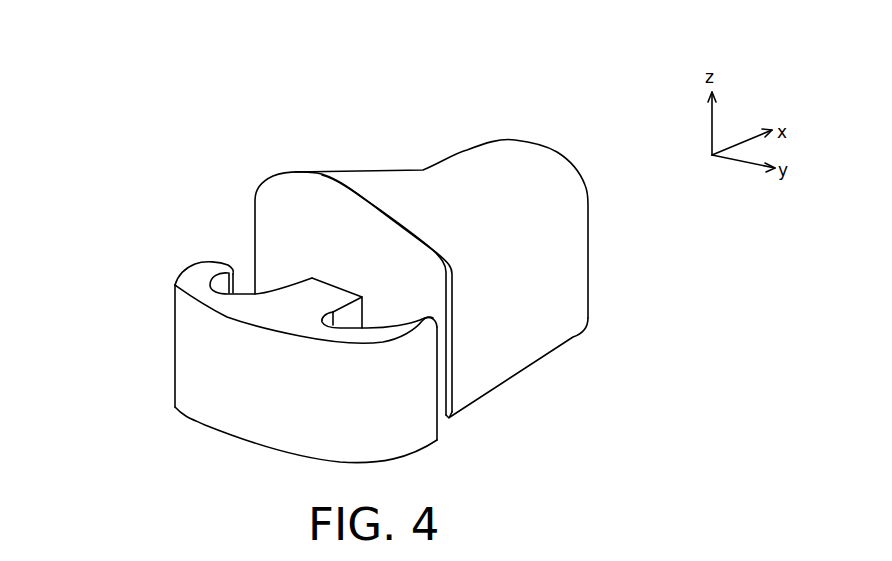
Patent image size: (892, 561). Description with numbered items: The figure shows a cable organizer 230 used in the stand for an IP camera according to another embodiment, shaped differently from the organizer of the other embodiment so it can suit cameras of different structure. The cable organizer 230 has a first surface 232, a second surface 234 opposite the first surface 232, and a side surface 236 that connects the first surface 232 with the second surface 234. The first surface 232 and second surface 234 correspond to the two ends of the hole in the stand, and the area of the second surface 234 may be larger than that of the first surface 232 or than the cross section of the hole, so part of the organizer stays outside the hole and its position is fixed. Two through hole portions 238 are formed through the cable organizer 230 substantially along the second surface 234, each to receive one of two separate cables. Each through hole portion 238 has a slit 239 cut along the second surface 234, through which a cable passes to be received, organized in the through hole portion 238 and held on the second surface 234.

The cable organizer 230 is at (128, 140).
The first surface 232 is at (570, 163).
The second surface 234 is at (443, 415).
The side surface 236 is at (513, 340).
The through hole portion 238 is at (383, 317).
The slit 239 is at (242, 267).